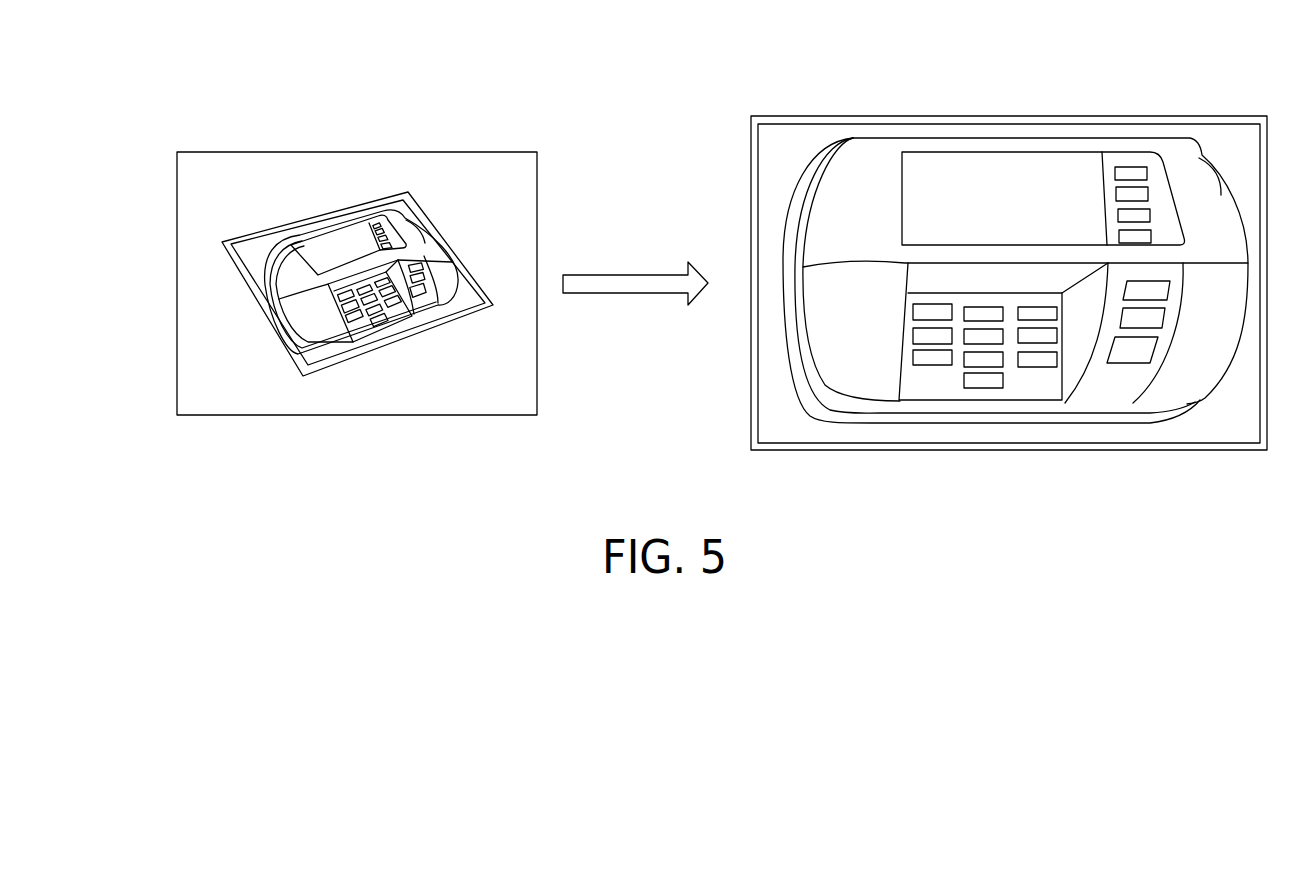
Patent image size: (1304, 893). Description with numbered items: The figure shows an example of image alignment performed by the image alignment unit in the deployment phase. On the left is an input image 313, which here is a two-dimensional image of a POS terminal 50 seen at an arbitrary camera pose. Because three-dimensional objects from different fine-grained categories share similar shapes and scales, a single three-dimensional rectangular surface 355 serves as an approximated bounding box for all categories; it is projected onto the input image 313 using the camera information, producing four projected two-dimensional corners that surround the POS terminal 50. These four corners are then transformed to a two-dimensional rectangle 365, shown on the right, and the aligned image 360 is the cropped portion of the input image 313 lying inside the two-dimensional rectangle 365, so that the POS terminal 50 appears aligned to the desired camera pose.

The POS terminal 50 is at (281, 263).
The input image 313 is at (518, 400).
The 3D rectangular surface 355 is at (282, 333).
The 2D rectangle 365 is at (815, 117).
The aligned image 360 is at (1244, 430).